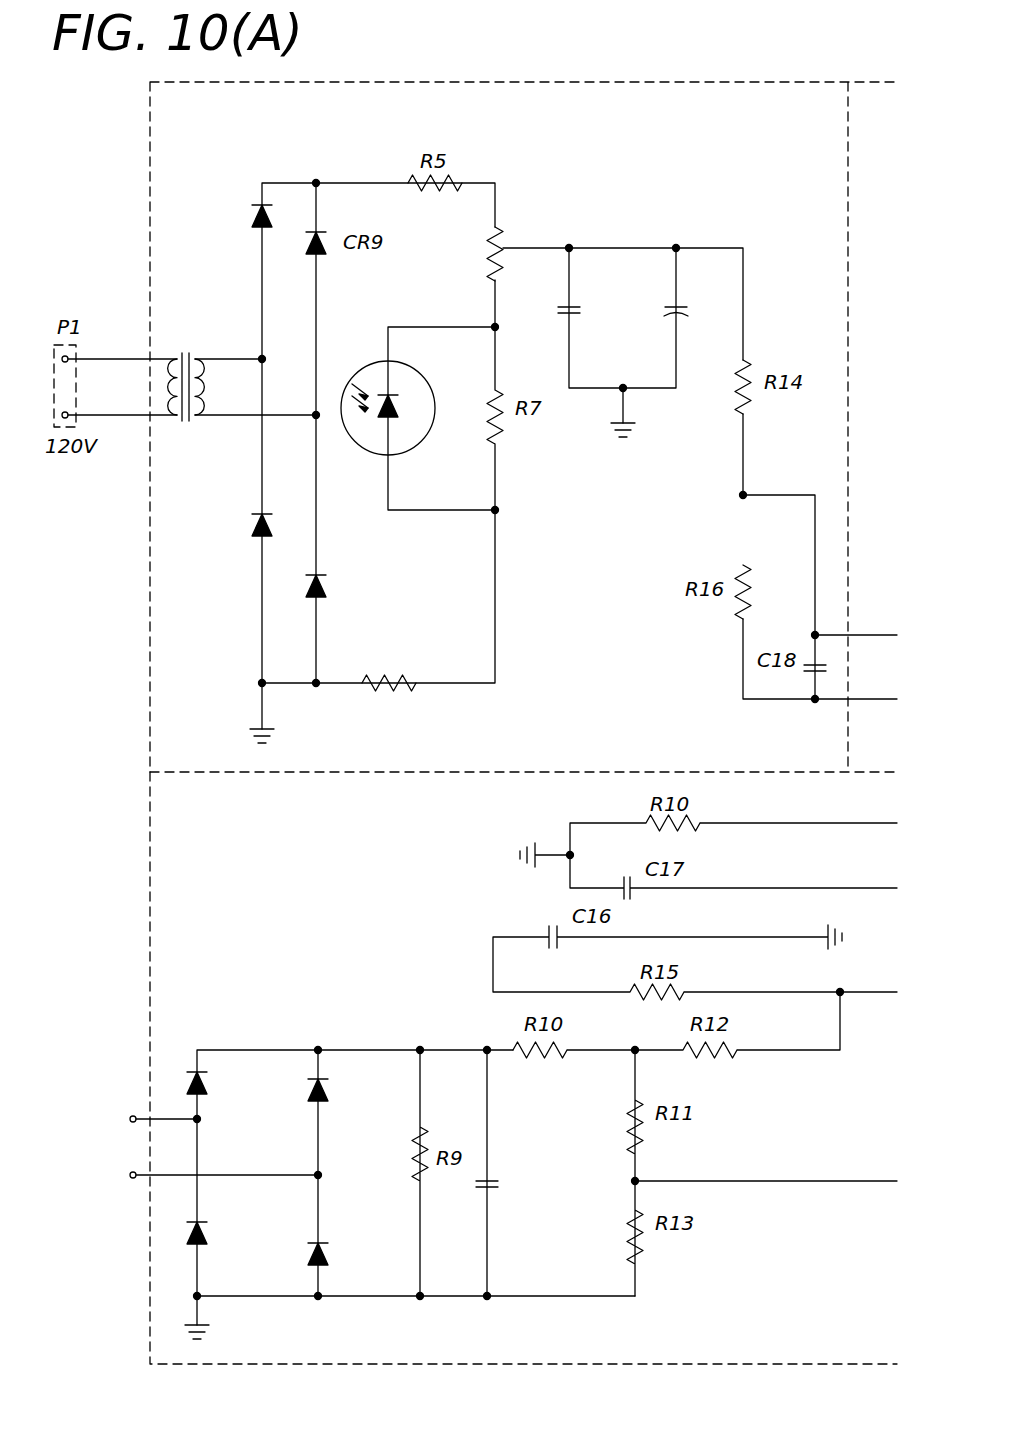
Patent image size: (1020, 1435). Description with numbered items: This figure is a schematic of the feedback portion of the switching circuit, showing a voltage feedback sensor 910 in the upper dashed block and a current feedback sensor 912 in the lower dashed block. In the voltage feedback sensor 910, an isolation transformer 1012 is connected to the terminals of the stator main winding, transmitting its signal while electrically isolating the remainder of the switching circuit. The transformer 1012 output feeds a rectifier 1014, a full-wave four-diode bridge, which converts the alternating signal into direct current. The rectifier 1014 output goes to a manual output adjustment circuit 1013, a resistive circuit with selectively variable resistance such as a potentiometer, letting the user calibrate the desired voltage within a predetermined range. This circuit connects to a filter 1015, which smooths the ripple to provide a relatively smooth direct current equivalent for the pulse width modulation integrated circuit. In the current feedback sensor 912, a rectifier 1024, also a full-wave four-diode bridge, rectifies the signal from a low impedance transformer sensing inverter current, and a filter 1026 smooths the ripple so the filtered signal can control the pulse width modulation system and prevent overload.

The voltage feedback sensor 910 is at (537, 82).
The current feedback sensor 912 is at (652, 1364).
The transformer 1012 is at (201, 439).
The manual output adjustment circuit 1013 is at (513, 235).
The rectifier 1014 is at (252, 234).
The filter 1015 is at (672, 243).
The rectifier 1024 is at (130, 1078).
The filter 1026 is at (468, 1047).